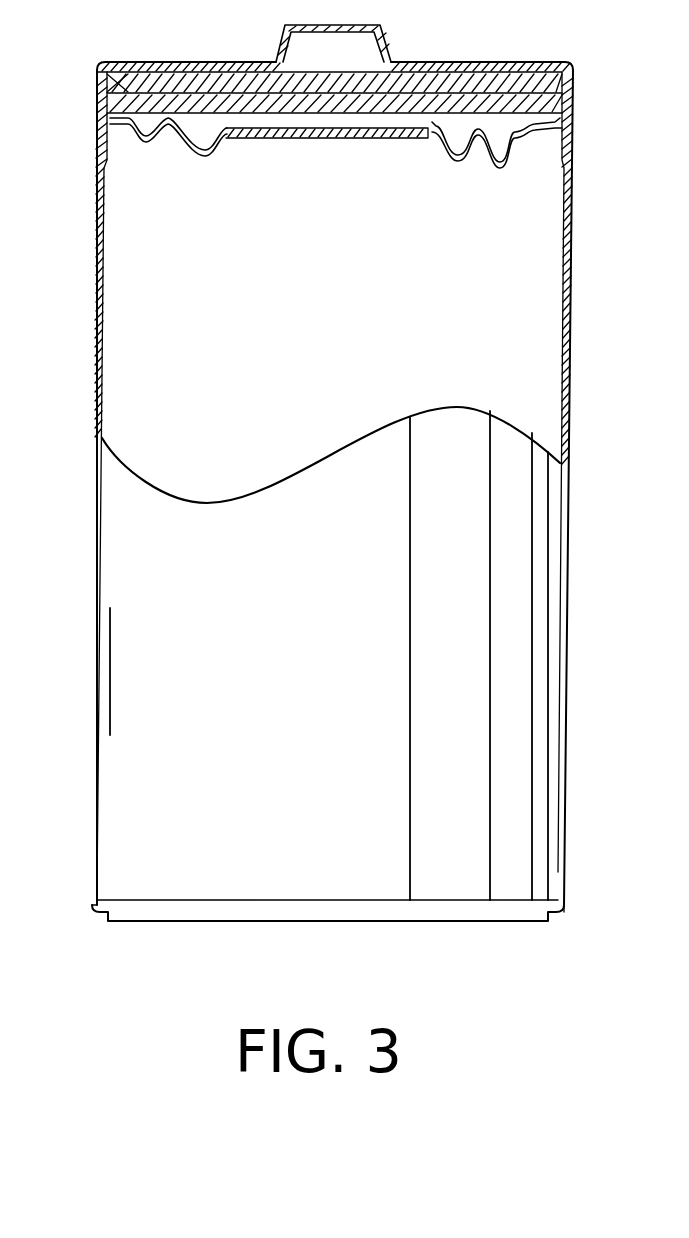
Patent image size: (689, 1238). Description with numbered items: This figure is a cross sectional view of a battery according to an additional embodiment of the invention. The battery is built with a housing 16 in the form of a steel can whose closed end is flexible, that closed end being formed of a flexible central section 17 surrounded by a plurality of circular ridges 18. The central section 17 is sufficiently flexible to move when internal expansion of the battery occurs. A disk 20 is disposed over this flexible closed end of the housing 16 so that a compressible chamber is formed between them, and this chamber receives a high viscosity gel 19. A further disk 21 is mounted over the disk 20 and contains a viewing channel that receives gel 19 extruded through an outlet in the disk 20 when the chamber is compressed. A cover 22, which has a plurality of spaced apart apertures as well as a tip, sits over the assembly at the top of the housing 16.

The housing 16 is at (95, 262).
The flexible central section 17 is at (345, 141).
The circular ridges 18 is at (495, 152).
The high viscosity gel 19 is at (425, 141).
The disk 20 is at (100, 103).
The further disk 21 is at (567, 78).
The cover 22 is at (552, 72).